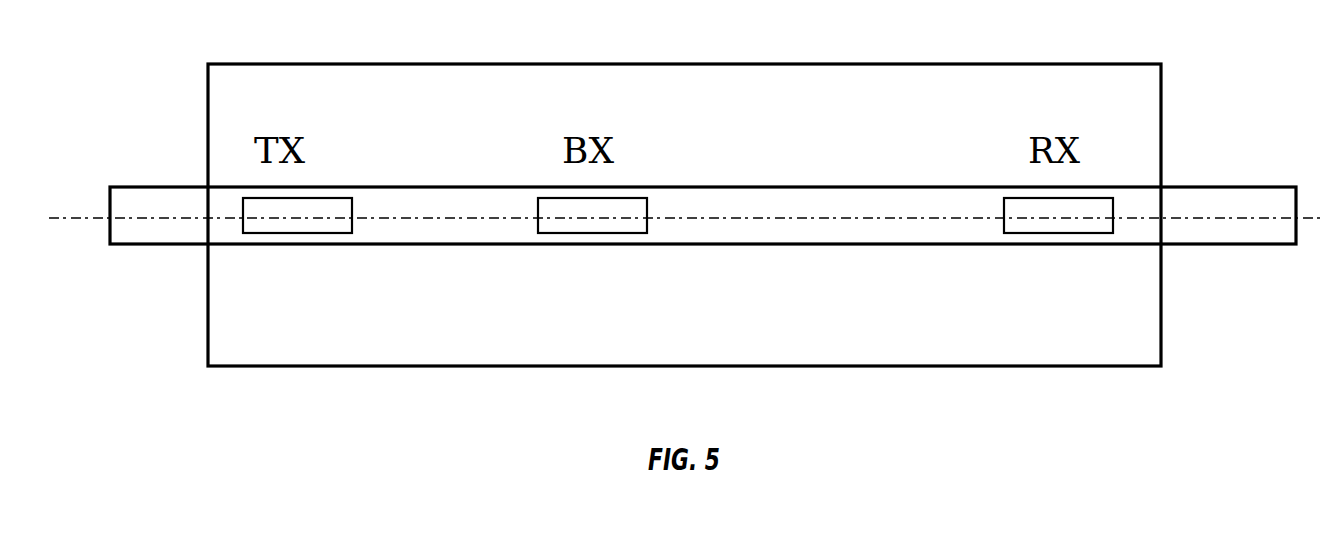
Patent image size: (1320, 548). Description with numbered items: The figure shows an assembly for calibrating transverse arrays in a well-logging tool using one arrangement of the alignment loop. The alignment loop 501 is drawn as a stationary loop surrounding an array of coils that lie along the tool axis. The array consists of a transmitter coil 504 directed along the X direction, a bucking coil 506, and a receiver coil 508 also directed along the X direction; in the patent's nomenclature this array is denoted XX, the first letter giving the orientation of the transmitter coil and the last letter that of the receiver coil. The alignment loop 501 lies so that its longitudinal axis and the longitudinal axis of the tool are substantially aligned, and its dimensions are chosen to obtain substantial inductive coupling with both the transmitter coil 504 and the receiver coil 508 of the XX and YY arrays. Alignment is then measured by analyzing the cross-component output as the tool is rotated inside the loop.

The alignment loop 501 is at (530, 63).
The transmitter coil 504 is at (296, 227).
The bucking coil 506 is at (603, 227).
The receiver coil 508 is at (1035, 227).